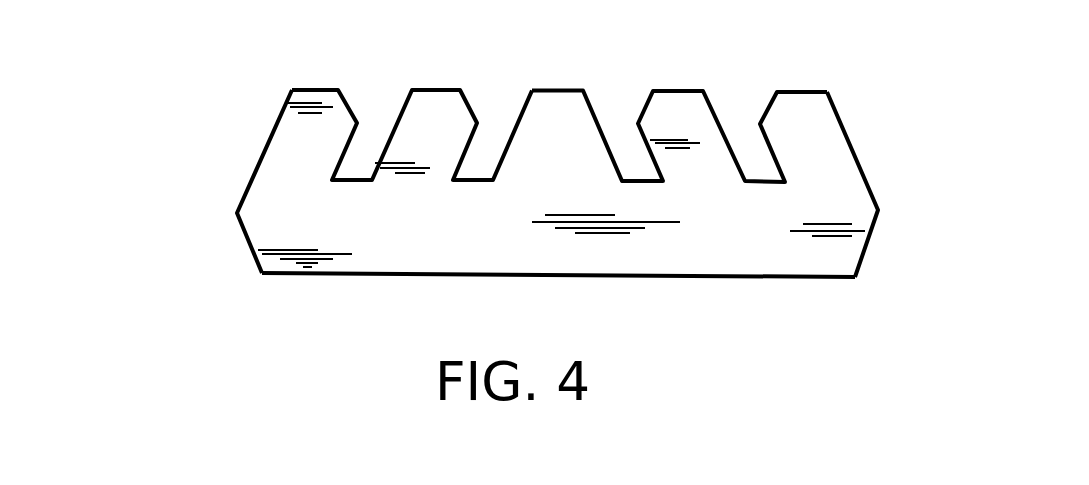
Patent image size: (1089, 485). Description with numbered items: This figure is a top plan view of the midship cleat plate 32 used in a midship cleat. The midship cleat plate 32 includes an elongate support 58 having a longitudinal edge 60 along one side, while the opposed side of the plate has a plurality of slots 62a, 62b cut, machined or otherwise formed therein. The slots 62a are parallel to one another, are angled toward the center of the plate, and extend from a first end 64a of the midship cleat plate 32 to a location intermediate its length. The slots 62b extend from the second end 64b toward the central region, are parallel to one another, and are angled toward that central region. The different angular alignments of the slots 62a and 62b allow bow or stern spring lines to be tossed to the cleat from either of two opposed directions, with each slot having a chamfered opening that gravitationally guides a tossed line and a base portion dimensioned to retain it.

The midship cleat plate 32 is at (257, 118).
The elongate support 58 is at (468, 247).
The longitudinal edge 60 is at (598, 280).
The slots 62a is at (622, 145).
The slots 62b is at (366, 138).
The first end 64a is at (878, 210).
The second end 64b is at (238, 214).